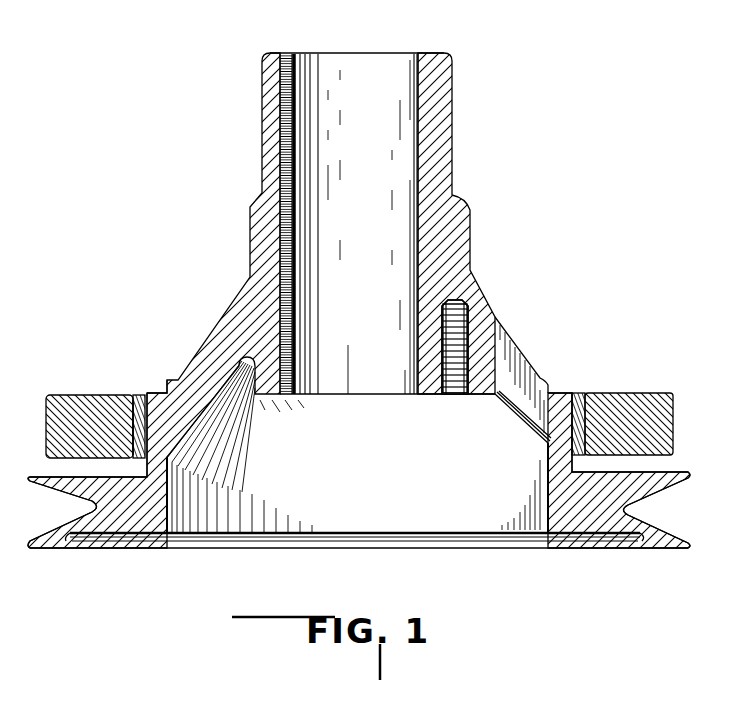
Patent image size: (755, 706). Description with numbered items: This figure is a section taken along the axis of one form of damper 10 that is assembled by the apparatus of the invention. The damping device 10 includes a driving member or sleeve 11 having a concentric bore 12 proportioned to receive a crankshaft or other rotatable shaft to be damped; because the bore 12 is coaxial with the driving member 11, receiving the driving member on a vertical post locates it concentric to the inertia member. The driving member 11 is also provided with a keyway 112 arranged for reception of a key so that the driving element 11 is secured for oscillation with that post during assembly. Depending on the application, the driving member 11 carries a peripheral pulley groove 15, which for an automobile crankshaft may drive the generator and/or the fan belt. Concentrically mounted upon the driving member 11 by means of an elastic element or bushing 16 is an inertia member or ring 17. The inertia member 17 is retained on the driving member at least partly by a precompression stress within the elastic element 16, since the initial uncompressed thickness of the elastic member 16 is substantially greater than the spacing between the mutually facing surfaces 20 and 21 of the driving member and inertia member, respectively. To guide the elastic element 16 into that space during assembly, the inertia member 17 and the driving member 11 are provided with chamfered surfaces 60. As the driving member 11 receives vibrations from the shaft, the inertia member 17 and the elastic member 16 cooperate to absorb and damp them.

The damper 10 is at (506, 238).
The driving member 11 is at (262, 205).
The concentric bore 12 is at (373, 62).
The keyway 112 is at (285, 53).
The peripheral pulley groove 15 is at (653, 523).
The elastic element 16 is at (140, 396).
The inertia member 17 is at (67, 403).
The mutually facing surface of driving member 20 is at (142, 437).
The mutually facing surface of inertia member 21 is at (134, 425).
The chamfered surfaces 60 is at (577, 393).